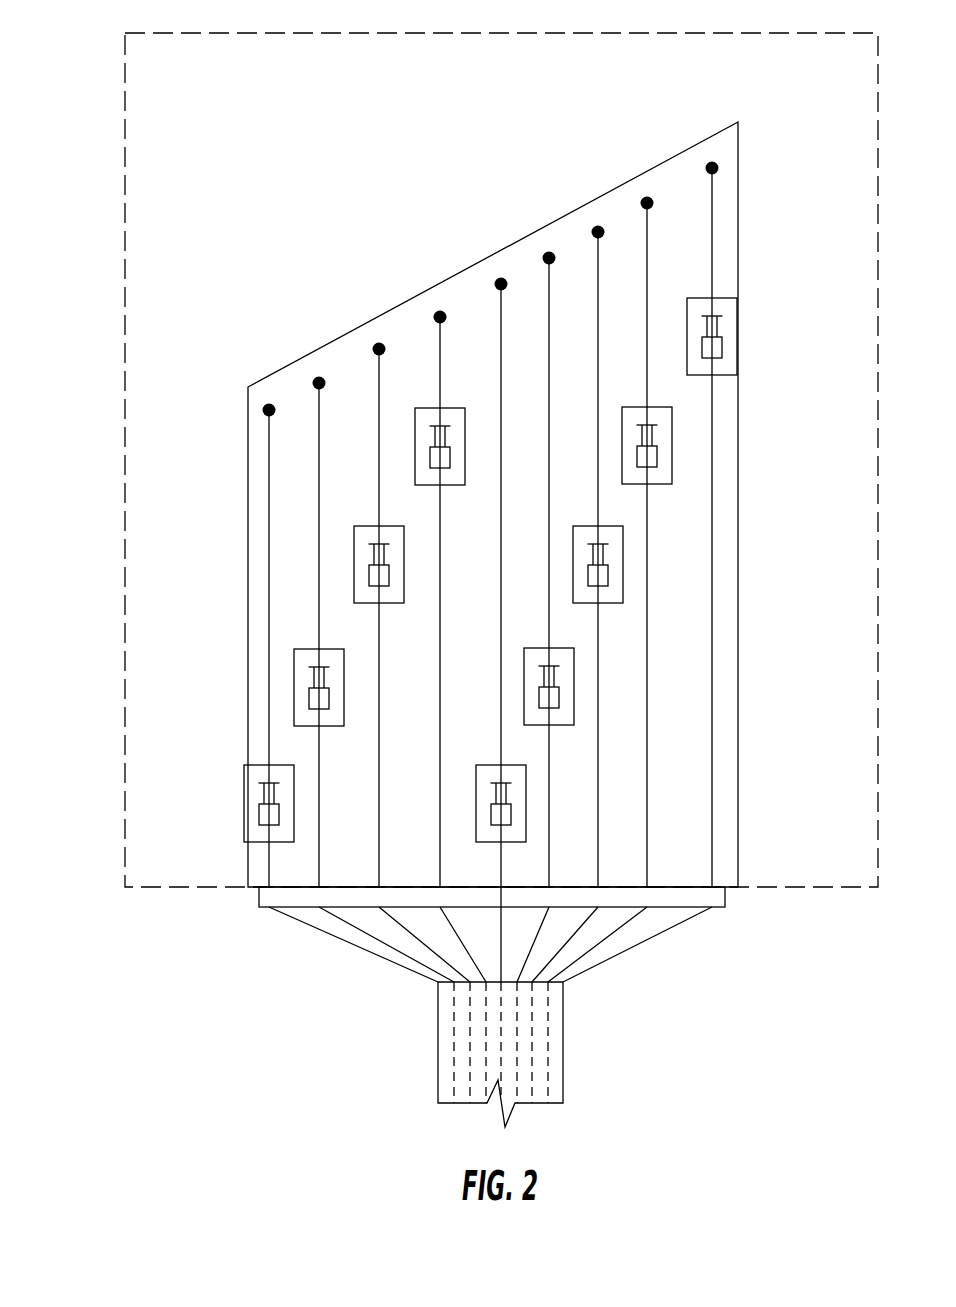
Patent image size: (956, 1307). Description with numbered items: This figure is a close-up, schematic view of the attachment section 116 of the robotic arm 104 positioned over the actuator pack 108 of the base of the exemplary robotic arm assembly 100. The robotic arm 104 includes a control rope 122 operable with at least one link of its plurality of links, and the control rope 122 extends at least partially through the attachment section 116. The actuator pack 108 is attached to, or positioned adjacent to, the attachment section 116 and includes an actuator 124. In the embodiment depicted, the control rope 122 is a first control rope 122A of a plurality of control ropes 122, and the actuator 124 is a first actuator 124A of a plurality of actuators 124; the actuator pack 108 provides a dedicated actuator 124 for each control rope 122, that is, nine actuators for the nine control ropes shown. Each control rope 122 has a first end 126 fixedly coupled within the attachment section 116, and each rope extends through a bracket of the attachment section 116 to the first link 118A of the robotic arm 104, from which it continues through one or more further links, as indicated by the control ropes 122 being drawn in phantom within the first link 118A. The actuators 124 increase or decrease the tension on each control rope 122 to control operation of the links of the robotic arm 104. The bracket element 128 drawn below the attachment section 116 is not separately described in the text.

The robotic arm assembly 100 is at (68, 80).
The robotic arm 104 is at (800, 1093).
The actuator pack 108 is at (838, 505).
The attachment section 116 is at (738, 240).
The first link 118A is at (563, 1052).
The control rope 122 is at (319, 510).
The first control rope 122A is at (269, 635).
The actuator 124 is at (697, 298).
The first actuator 124A is at (249, 789).
The first end 126 is at (340, 382).
The cable guide bar 128 is at (687, 895).